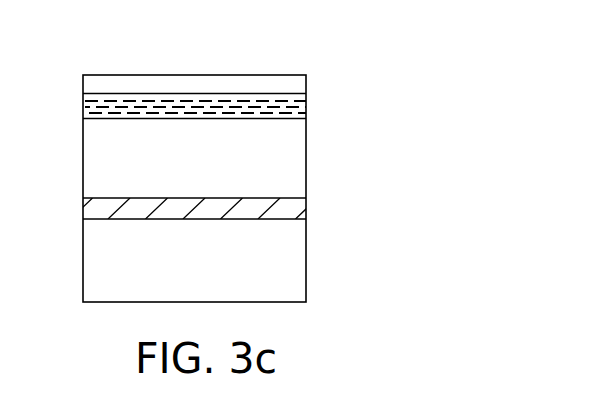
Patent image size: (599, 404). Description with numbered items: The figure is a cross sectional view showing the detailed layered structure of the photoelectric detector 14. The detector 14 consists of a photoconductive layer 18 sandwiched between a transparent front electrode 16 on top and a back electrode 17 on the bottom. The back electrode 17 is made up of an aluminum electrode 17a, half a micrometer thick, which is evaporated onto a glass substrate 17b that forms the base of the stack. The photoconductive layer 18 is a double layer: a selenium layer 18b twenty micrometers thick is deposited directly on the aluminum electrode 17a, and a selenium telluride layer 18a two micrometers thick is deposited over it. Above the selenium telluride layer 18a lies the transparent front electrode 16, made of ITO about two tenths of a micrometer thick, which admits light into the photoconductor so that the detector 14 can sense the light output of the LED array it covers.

The photoelectric detector 14 is at (269, 75).
The transparent front electrode 16 is at (301, 85).
The back electrode 17 is at (308, 243).
The aluminum electrode 17a is at (306, 211).
The glass substrate 17b is at (306, 281).
The photoconductive layer 18 is at (310, 148).
The selenium telluride layer 18a is at (306, 98).
The selenium layer 18b is at (306, 176).